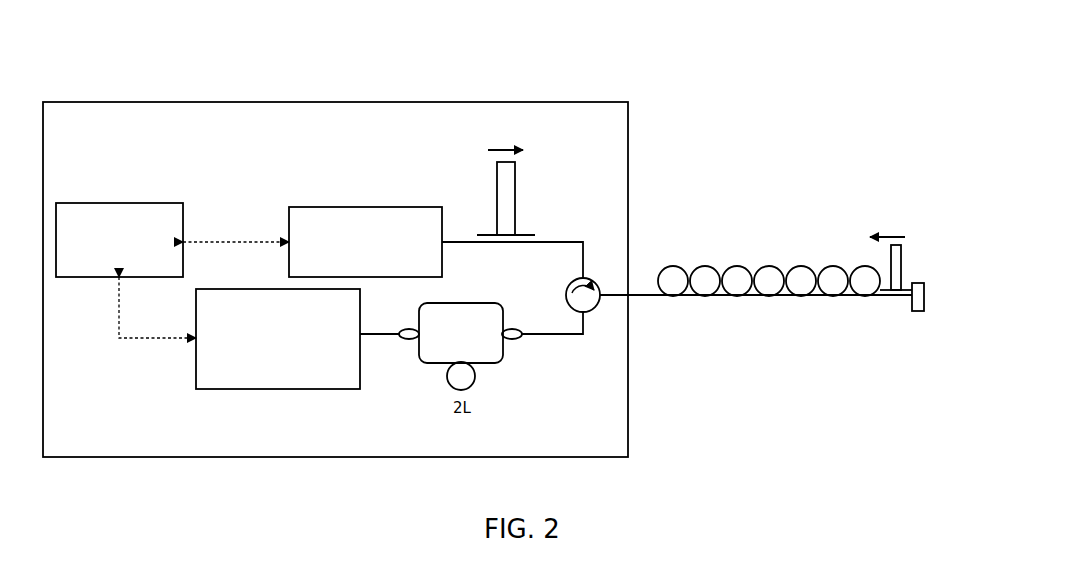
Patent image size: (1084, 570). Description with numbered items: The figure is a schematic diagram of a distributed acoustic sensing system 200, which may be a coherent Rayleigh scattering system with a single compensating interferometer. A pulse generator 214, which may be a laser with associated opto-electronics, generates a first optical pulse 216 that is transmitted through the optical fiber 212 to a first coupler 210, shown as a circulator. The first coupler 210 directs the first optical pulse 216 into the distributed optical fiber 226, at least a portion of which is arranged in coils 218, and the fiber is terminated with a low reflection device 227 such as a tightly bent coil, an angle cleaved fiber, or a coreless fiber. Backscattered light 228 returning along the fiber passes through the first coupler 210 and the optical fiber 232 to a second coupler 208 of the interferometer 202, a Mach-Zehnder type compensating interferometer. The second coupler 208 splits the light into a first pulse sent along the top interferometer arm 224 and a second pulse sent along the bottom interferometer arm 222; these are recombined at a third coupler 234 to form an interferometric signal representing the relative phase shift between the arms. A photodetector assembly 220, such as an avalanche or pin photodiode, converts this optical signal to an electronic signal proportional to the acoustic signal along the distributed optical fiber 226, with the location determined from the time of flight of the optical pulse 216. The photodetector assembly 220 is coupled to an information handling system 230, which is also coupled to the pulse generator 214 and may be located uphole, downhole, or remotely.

The distributed acoustic sensing system 200 is at (757, 60).
The interferometer 202 is at (491, 380).
The second coupler 208 is at (518, 343).
The first coupler 210 is at (590, 280).
The optical fiber 212 is at (550, 242).
The pulse generator 214 is at (362, 207).
The first optical pulse 216 is at (515, 190).
The coils 218 is at (776, 240).
The photodetector assembly 220 is at (275, 389).
The bottom interferometer arm 222 is at (431, 363).
The top interferometer arm 224 is at (462, 303).
The distributed optical fiber 226 is at (878, 297).
The low reflection device 227 is at (918, 311).
The backscattered light 228 is at (901, 255).
The information handling system 230 is at (118, 203).
The optical fiber 232 is at (548, 338).
The third coupler 234 is at (404, 340).